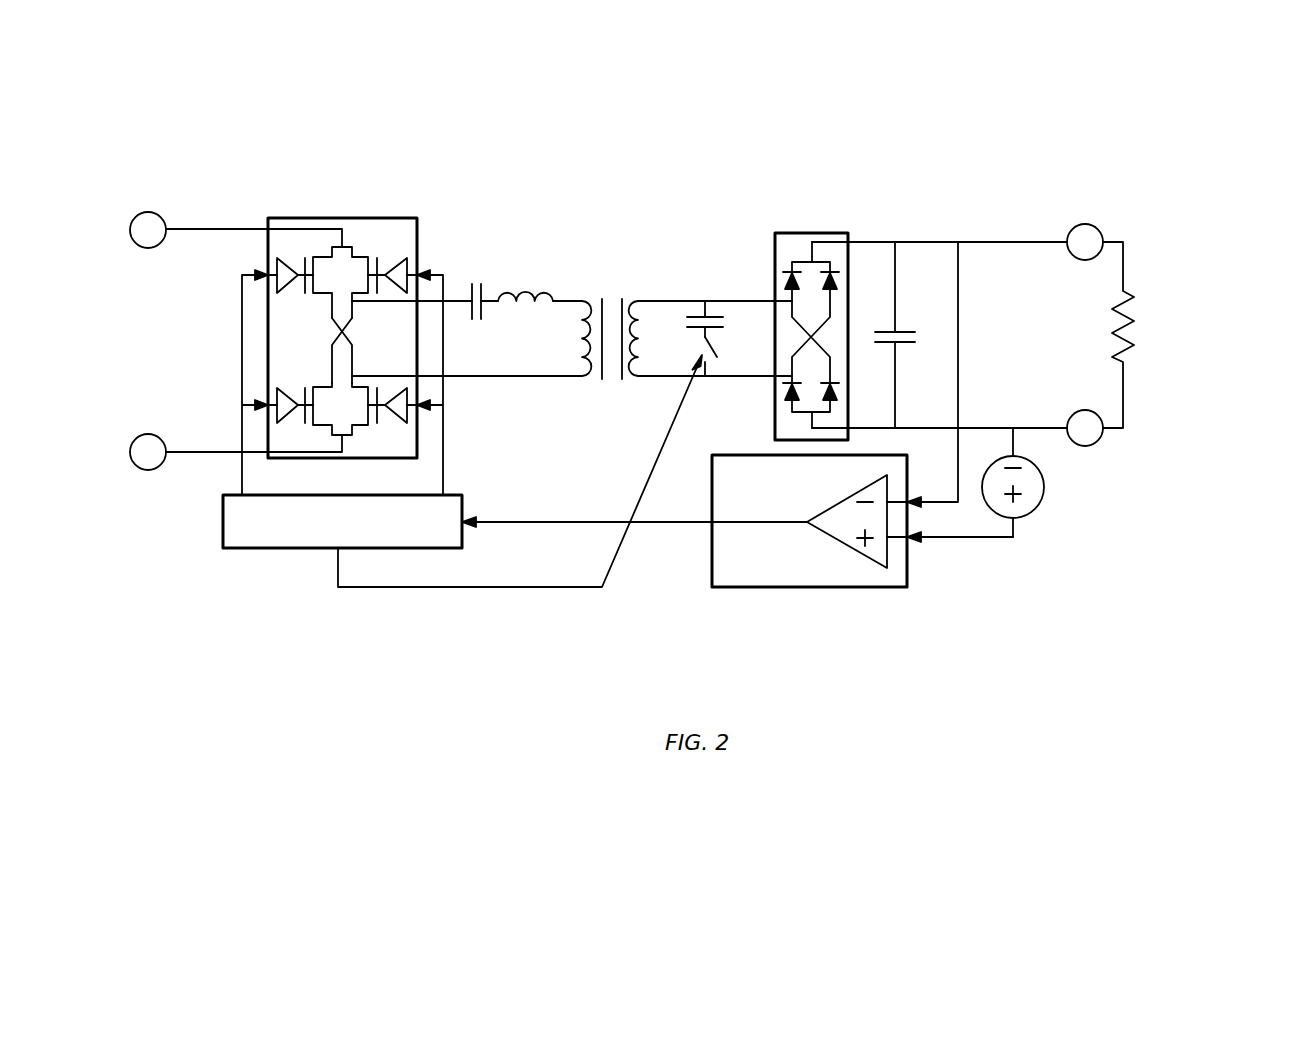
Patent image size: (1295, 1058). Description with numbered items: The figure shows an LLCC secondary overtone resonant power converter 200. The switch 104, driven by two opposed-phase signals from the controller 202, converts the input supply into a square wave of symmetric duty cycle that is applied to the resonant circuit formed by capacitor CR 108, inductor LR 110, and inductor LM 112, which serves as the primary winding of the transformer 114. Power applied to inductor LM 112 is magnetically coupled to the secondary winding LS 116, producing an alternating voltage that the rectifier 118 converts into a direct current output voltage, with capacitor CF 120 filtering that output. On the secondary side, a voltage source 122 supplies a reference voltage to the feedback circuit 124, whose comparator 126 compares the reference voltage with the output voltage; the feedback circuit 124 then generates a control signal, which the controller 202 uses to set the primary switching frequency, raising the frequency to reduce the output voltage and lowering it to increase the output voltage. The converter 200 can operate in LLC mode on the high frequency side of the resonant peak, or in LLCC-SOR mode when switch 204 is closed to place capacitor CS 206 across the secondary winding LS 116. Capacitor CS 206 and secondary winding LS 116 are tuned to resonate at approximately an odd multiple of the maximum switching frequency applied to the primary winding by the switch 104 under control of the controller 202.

The LLCC secondary overtone resonant power converter 200 is at (1194, 137).
The power switching circuit 104 is at (406, 203).
The capacitor CR 108 is at (476, 259).
The inductor LR 110 is at (525, 259).
The inductor LM 112 is at (583, 301).
The transformer 114 is at (638, 377).
The secondary winding LS 116 is at (641, 301).
The rectifying circuit 118 is at (855, 206).
The capacitor CF 120 is at (931, 352).
The voltage source 122 is at (1044, 484).
The feedback circuit 124 is at (745, 588).
The comparator 126 is at (834, 540).
The controller 202 is at (263, 549).
The switch 204 is at (734, 333).
The filter capacitor CS 206 is at (714, 301).